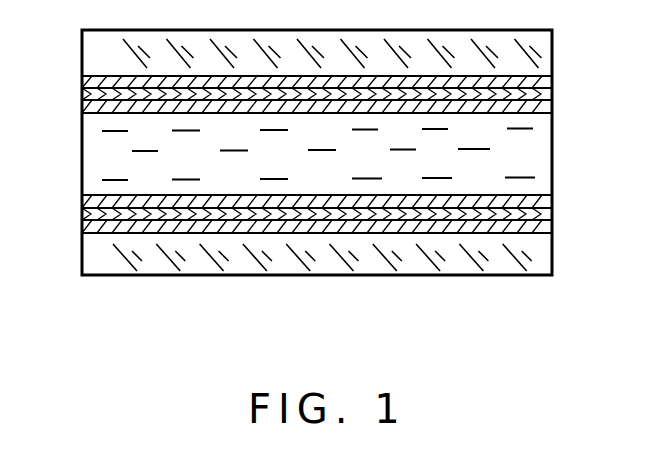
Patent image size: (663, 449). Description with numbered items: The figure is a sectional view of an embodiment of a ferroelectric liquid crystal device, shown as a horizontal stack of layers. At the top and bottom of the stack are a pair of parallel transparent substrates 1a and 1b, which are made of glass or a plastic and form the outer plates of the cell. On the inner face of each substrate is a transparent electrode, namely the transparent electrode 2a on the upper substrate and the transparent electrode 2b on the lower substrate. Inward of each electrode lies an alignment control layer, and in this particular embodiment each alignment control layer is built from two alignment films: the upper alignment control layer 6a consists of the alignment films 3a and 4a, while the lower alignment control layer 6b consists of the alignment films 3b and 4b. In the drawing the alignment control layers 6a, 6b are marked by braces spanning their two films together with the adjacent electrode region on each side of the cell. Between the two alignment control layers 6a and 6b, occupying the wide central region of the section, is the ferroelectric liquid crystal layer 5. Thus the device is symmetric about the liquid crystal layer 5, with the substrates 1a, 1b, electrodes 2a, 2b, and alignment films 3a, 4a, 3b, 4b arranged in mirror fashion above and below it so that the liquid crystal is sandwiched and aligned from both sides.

The transparent substrate 1a is at (552, 44).
The transparent electrode 2a is at (552, 73).
The alignment film 3a is at (552, 90).
The alignment film 4a is at (552, 104).
The alignment control layer 6a is at (322, 93).
The ferroelectric liquid crystal layer 5 is at (102, 158).
The alignment film 4b is at (552, 202).
The alignment film 3b is at (552, 211).
The transparent electrode 2b is at (552, 223).
The alignment control layer 6b is at (323, 208).
The transparent substrate 1b is at (545, 251).